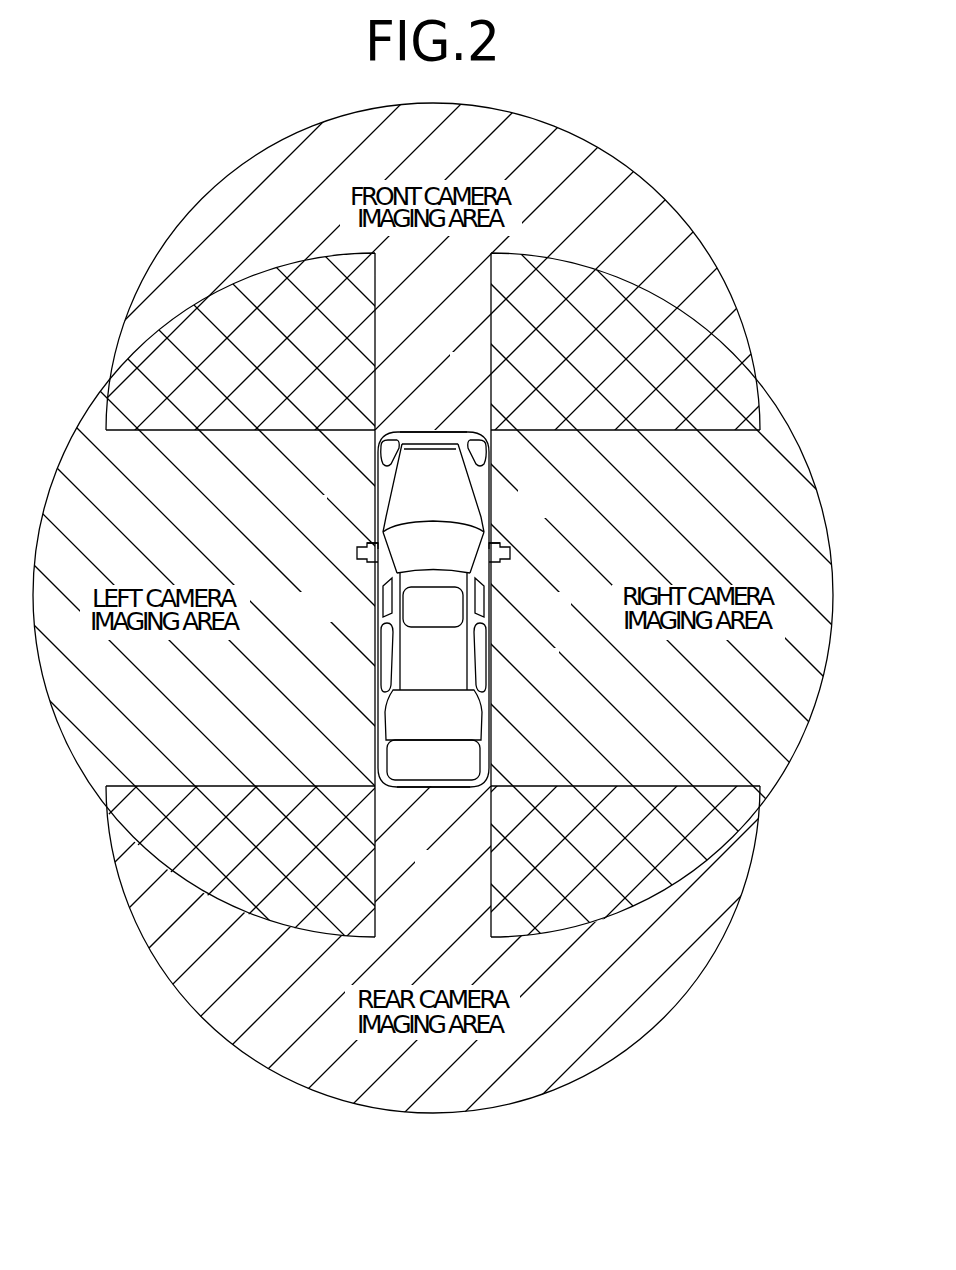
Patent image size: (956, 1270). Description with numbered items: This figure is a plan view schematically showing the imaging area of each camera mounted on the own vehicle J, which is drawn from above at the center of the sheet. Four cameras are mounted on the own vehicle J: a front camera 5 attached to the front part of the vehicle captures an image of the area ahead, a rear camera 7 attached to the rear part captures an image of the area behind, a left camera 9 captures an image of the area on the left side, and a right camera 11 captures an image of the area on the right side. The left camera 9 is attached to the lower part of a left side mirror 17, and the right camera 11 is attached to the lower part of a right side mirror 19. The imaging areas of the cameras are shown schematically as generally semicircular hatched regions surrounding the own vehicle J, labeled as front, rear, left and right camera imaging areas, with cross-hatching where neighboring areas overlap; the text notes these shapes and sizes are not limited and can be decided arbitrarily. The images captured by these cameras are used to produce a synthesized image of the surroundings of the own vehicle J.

The front camera 5 is at (433, 429).
The rear camera 7 is at (431, 788).
The left camera 9 is at (368, 543).
The right camera 11 is at (497, 543).
The left side mirror 17 is at (366, 560).
The right side mirror 19 is at (503, 560).
The own vehicle J is at (442, 670).